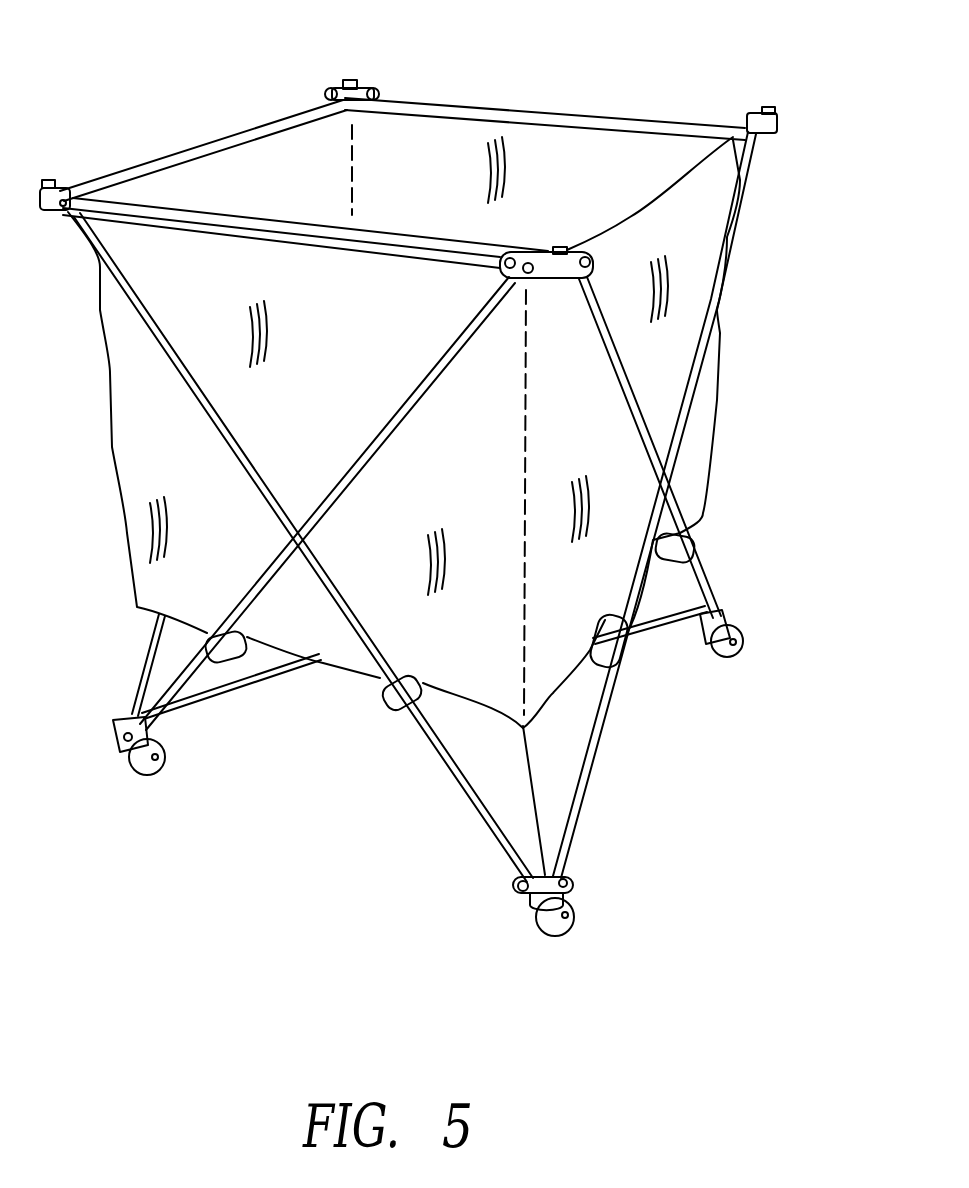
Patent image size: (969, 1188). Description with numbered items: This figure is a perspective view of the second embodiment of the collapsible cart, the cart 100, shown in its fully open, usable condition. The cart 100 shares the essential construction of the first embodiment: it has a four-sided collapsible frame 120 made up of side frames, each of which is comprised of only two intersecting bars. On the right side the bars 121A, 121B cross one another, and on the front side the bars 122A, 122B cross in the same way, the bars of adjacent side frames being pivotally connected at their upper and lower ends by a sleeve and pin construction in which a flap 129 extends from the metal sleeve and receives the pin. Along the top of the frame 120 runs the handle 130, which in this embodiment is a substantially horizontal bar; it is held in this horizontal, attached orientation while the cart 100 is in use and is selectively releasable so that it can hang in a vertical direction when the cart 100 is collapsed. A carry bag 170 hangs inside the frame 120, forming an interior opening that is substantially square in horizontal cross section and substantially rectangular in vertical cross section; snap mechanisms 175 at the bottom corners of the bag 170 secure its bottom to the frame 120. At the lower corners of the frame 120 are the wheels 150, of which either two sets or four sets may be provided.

The cart 100 is at (201, 103).
The collapsible frame 120 is at (716, 344).
The bar 121A is at (637, 417).
The bar 121B is at (593, 753).
The bar 122A is at (443, 760).
The bar 122B is at (175, 690).
The flap 129 is at (567, 877).
The handle 130 is at (133, 218).
The wheels 150 is at (733, 661).
The carry bag 170 is at (700, 210).
The snap mechanisms 175 is at (690, 547).